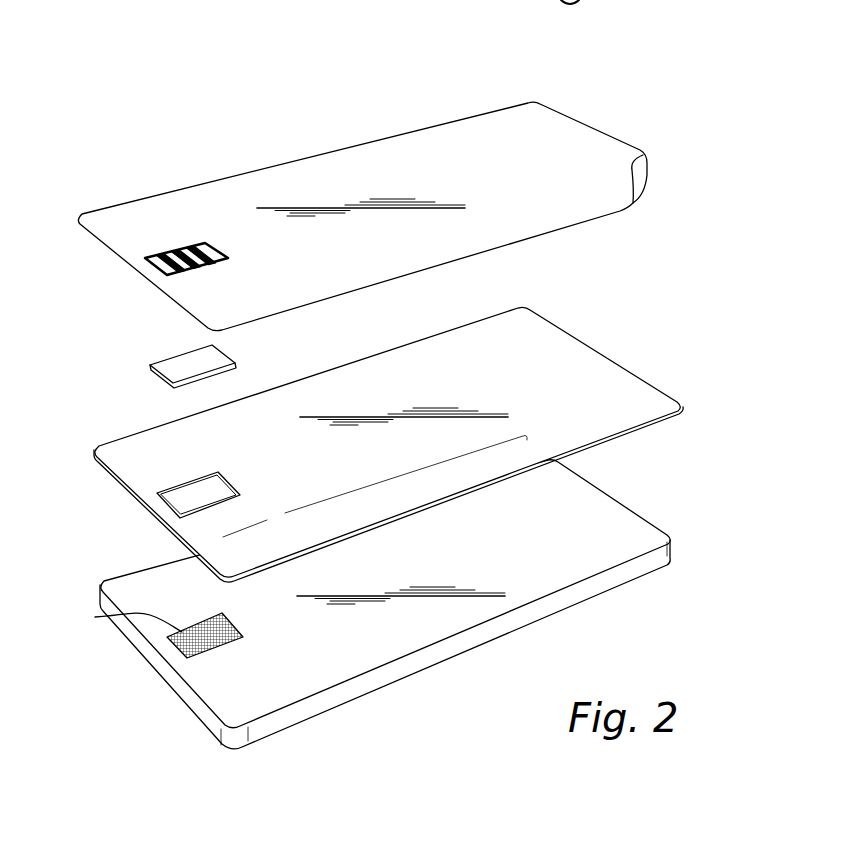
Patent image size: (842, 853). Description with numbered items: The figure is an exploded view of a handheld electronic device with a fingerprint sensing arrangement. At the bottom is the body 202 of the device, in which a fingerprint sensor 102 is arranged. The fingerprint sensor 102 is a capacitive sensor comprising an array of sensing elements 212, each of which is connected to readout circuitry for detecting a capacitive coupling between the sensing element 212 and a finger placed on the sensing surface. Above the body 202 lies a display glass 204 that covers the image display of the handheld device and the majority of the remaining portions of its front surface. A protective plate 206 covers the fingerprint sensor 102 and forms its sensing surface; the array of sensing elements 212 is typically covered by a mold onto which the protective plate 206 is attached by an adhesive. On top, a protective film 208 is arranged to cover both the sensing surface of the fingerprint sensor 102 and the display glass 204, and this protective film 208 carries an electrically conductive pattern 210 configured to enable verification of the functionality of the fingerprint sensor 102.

The protective film 208 is at (425, 160).
The electrically conductive pattern 210 is at (183, 250).
The protective plate 206 is at (180, 368).
The display glass 204 is at (620, 383).
The sensing element 212 is at (95, 617).
The body 202 is at (620, 578).
The fingerprint sensor 102 is at (217, 648).